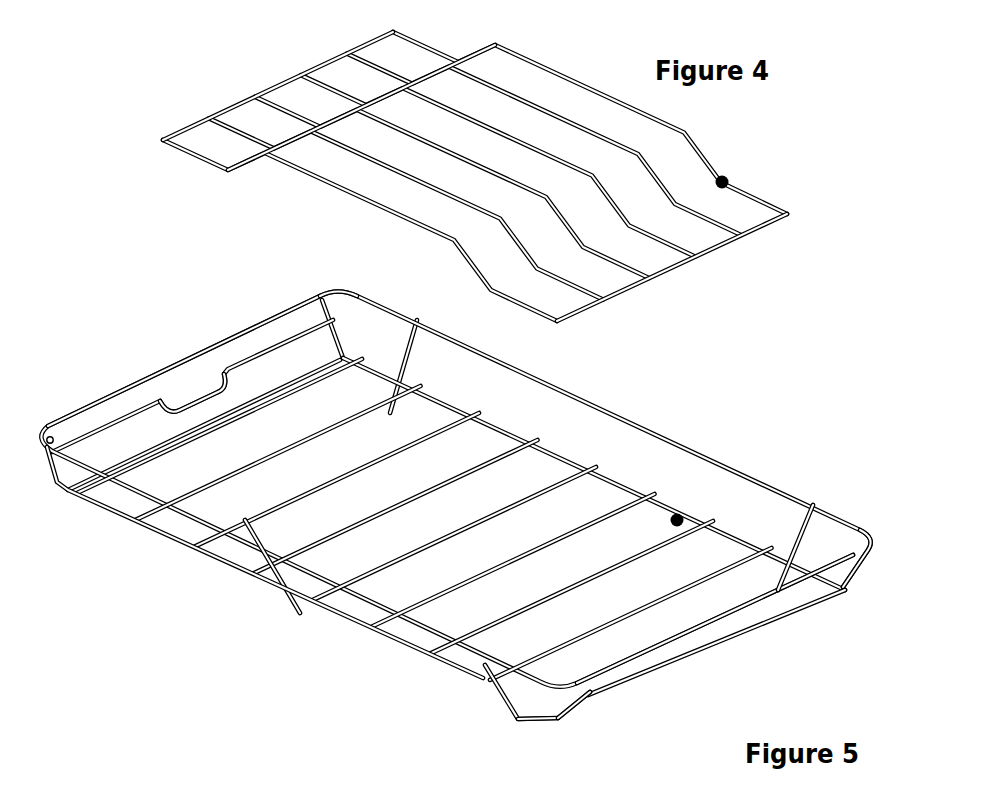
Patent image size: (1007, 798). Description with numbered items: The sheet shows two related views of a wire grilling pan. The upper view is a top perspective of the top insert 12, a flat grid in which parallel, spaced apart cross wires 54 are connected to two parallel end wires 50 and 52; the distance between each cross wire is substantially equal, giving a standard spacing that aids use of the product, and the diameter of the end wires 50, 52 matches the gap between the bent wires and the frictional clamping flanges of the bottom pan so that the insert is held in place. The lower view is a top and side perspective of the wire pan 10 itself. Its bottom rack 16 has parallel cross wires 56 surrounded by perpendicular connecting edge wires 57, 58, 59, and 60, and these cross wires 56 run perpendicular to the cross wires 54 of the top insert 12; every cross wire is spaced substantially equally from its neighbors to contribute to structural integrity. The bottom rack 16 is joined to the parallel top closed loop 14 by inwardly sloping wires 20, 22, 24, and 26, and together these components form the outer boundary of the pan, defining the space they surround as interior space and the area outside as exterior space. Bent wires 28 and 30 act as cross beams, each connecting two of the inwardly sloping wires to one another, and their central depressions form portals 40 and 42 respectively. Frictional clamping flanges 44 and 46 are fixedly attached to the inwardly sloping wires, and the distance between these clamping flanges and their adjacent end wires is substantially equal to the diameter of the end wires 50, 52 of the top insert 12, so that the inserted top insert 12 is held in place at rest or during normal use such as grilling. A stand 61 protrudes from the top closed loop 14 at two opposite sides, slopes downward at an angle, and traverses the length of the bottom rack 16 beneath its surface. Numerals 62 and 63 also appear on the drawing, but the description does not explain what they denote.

In FIG. 5, the wire pan 10 is at (684, 520).
In FIG. 4, the top insert 12 is at (729, 183).
In FIG. 5, the top closed loop 14 is at (708, 456).
In FIG. 5, the bottom rack 16 is at (520, 436).
In FIG. 5, the inwardly sloping wire 20 is at (57, 480).
In FIG. 5, the inwardly sloping wire 22 is at (325, 307).
In FIG. 5, the inwardly sloping wire 24 is at (580, 706).
In FIG. 5, the inwardly sloping wire 26 is at (862, 578).
In FIG. 5, the bent wire 28 is at (252, 360).
In FIG. 5, the bent wire 30 is at (803, 597).
In FIG. 5, the portal 40 is at (199, 397).
In FIG. 5, the portal 42 is at (720, 643).
In FIG. 5, the frictional clamping flange 44 is at (48, 434).
In FIG. 5, the frictional clamping flange 46 is at (335, 318).
In FIG. 4, the end wire 50 is at (323, 63).
In FIG. 4, the end wire 52 is at (744, 238).
In FIG. 4, the cross wires 54 is at (392, 168).
In FIG. 5, the cross wires 56 is at (416, 661).
In FIG. 5, the connecting edge wire 57 is at (535, 712).
In FIG. 5, the connecting edge wire 58 is at (562, 706).
In FIG. 5, the connecting edge wire 59 is at (450, 402).
In FIG. 5, the connecting edge wire 60 is at (252, 328).
In FIG. 5, the stand 61 is at (406, 358).
In FIG. 5, the rung 62 is at (560, 488).
In FIG. 5, the brace 63 is at (812, 516).